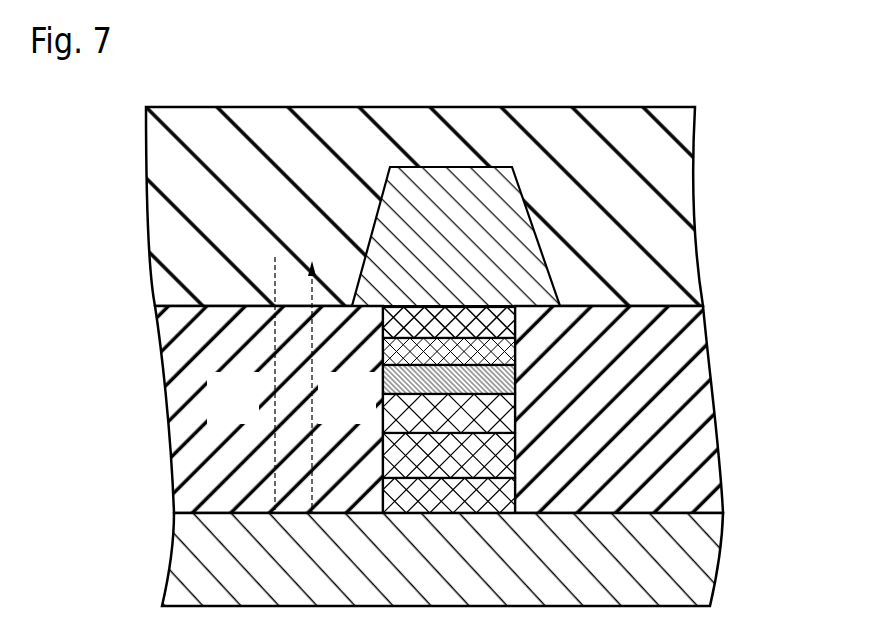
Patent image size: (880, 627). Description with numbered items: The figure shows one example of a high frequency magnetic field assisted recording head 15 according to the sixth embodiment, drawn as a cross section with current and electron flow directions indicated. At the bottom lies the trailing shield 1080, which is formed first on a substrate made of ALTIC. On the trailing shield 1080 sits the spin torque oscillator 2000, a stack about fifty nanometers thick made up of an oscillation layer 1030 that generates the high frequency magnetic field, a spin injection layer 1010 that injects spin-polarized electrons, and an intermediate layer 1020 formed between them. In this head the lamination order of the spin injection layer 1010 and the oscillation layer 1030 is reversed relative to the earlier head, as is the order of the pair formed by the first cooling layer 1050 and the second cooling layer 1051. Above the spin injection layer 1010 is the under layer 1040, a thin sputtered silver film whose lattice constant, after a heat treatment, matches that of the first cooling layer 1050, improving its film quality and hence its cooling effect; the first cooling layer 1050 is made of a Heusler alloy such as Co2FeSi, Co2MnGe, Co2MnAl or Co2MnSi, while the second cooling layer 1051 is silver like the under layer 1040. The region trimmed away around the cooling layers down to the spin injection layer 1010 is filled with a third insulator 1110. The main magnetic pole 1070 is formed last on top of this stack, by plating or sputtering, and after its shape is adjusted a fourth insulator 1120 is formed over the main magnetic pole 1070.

The high frequency magnetic field assisted recording head 15 is at (610, 90).
The fourth insulator 1120 is at (162, 250).
The third insulator 1110 is at (172, 430).
The main magnetic pole 1070 is at (512, 252).
The second cooling layer 1051 is at (508, 322).
The first cooling layer 1050 is at (508, 350).
The under layer 1040 is at (508, 378).
The spin injection layer 1010 is at (508, 412).
The intermediate layer 1020 is at (508, 447).
The oscillation layer 1030 is at (508, 490).
The spin torque oscillator 2000 is at (781, 403).
The trailing shield 1080 is at (707, 562).